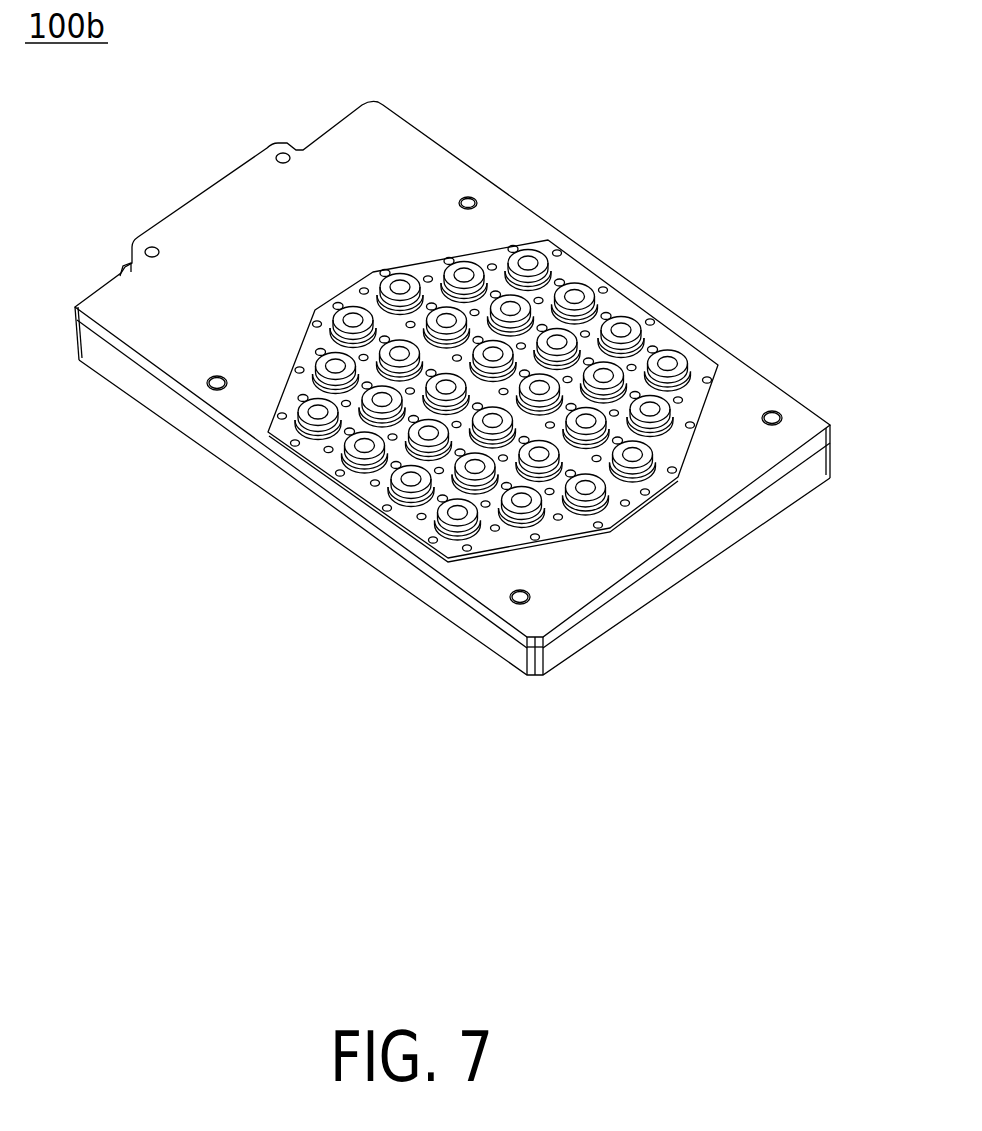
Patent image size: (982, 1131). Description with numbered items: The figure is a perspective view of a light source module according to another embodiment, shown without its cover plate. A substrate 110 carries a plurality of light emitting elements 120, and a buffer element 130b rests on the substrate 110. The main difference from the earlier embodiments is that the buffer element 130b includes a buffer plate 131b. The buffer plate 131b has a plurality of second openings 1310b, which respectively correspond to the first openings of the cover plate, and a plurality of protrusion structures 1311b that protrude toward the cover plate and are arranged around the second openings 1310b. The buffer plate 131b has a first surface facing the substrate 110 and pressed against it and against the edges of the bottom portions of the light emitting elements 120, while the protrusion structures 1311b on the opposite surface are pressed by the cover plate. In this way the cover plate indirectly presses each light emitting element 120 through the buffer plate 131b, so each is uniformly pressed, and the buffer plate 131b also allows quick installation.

The substrate 110 is at (648, 538).
The light emitting elements 120 is at (588, 283).
The buffer element 130b is at (588, 428).
The buffer plate 131b is at (762, 431).
The second openings 1310b is at (696, 386).
The protrusion structures 1311b is at (712, 338).